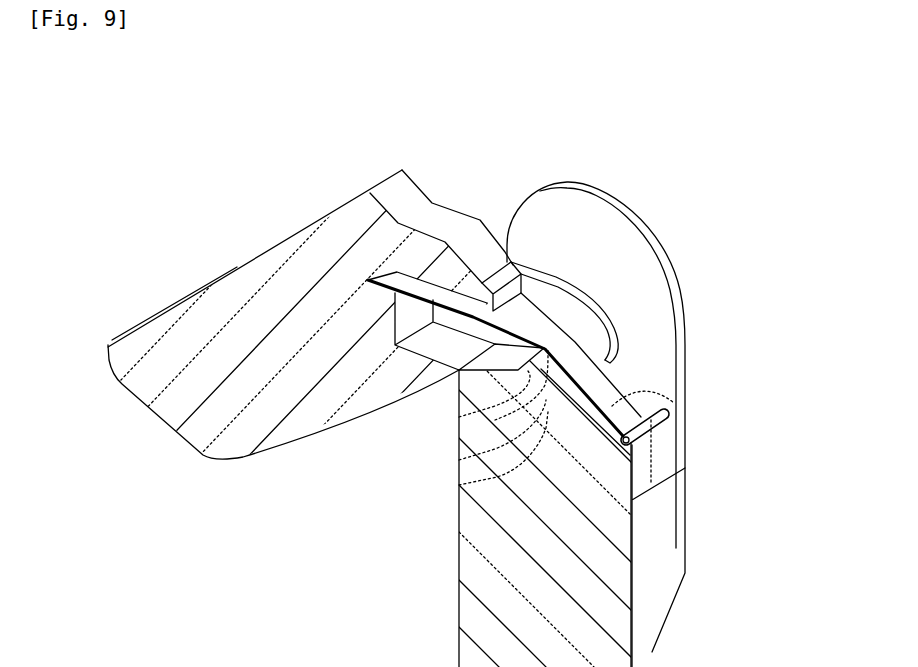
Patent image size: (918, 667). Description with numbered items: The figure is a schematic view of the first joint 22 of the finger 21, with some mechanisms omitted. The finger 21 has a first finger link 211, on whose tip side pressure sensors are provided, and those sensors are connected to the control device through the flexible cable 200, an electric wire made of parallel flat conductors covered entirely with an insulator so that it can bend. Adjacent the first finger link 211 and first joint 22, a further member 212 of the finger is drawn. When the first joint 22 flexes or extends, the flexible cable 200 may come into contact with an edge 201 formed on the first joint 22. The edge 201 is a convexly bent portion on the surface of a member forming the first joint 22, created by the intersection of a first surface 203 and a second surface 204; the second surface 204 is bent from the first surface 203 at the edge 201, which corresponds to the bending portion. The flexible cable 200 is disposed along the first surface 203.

The finger 21 is at (463, 162).
The first finger link 211 is at (293, 262).
The first joint 22 is at (652, 340).
The flexible cable 200 is at (622, 385).
The support column 212 is at (647, 618).
The second surface 204 is at (459, 417).
The edge 201 is at (459, 460).
The first surface 203 is at (459, 485).